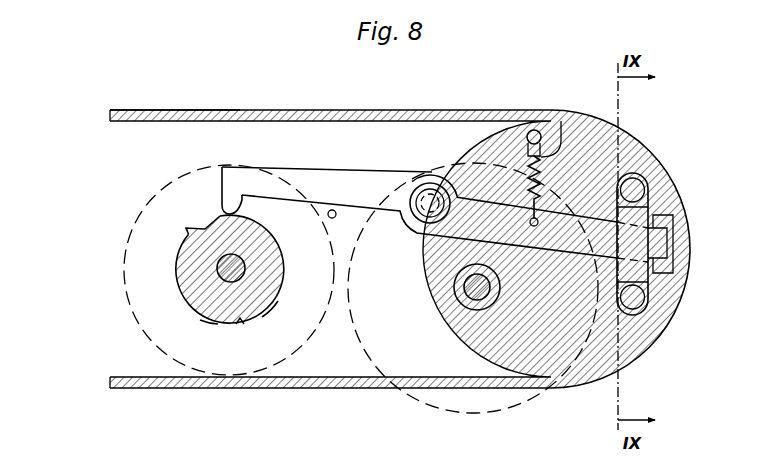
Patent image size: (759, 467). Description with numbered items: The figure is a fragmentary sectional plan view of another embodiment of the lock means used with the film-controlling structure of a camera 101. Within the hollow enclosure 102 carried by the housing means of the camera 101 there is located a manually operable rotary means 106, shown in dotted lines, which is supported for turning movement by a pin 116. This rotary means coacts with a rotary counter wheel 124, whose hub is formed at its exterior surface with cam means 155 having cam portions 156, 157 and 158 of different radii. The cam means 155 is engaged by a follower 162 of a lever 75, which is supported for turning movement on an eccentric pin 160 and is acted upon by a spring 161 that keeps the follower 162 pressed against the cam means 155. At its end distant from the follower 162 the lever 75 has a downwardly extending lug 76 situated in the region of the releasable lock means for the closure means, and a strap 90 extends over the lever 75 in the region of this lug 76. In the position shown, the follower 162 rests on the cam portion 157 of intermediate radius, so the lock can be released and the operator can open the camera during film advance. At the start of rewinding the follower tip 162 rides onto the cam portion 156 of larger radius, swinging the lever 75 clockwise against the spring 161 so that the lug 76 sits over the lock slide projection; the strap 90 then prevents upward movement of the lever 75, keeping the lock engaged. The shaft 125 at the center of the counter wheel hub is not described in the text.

The lever 75 is at (332, 180).
The lug 76 is at (674, 240).
The strap 90 is at (638, 215).
The camera 101 is at (280, 105).
The hollow enclosure 102 is at (177, 112).
The manually operable rotary means 106 is at (445, 408).
The pin 116 is at (477, 300).
The rotary counter wheel 124 is at (240, 316).
The shaft 125 is at (232, 262).
The cam means 155 is at (208, 326).
The cam portion of larger radius 156 is at (181, 302).
The cam portion of intermediate radius 157 is at (276, 296).
The cam portion 158 is at (212, 230).
The eccentric pin 160 is at (430, 195).
The spring 161 is at (562, 110).
The follower 162 is at (221, 197).